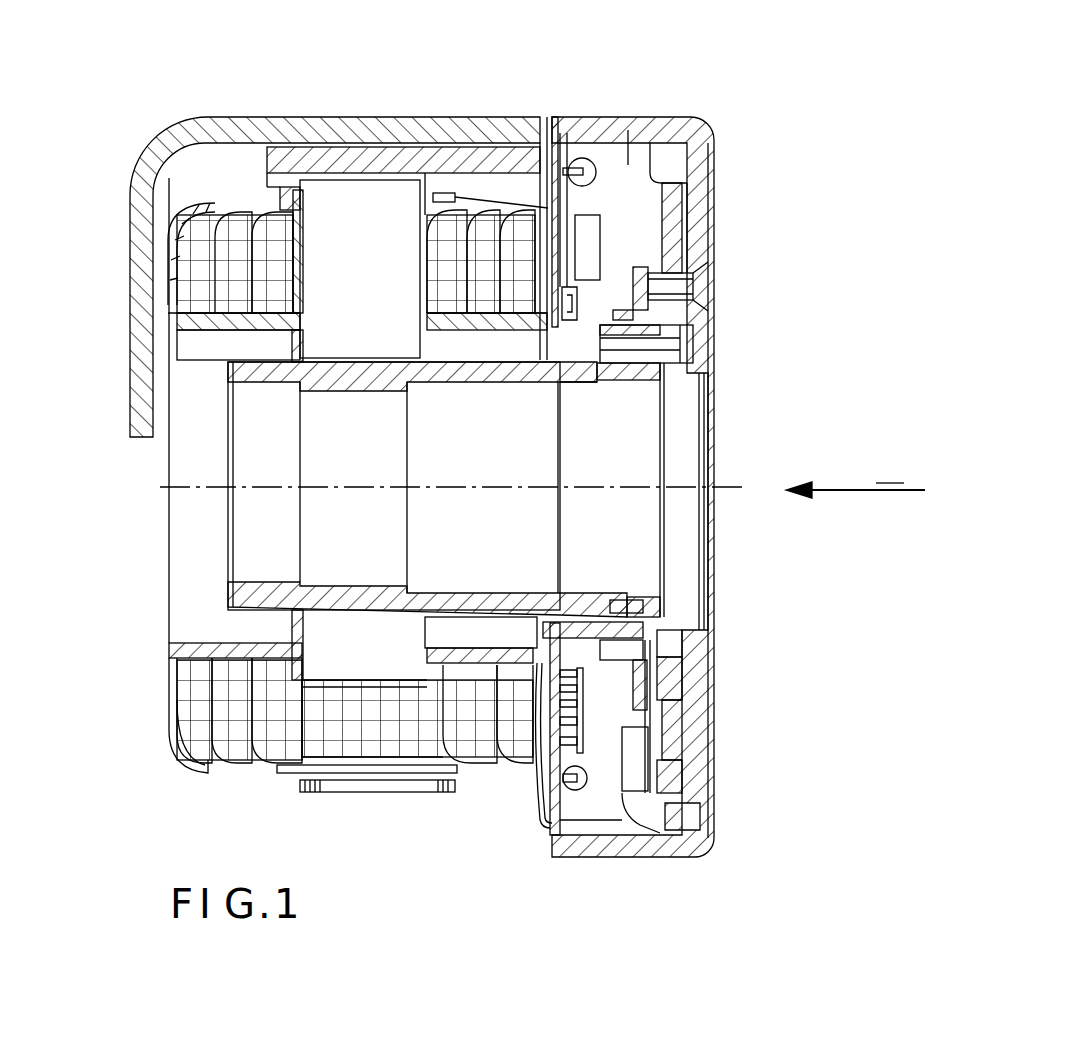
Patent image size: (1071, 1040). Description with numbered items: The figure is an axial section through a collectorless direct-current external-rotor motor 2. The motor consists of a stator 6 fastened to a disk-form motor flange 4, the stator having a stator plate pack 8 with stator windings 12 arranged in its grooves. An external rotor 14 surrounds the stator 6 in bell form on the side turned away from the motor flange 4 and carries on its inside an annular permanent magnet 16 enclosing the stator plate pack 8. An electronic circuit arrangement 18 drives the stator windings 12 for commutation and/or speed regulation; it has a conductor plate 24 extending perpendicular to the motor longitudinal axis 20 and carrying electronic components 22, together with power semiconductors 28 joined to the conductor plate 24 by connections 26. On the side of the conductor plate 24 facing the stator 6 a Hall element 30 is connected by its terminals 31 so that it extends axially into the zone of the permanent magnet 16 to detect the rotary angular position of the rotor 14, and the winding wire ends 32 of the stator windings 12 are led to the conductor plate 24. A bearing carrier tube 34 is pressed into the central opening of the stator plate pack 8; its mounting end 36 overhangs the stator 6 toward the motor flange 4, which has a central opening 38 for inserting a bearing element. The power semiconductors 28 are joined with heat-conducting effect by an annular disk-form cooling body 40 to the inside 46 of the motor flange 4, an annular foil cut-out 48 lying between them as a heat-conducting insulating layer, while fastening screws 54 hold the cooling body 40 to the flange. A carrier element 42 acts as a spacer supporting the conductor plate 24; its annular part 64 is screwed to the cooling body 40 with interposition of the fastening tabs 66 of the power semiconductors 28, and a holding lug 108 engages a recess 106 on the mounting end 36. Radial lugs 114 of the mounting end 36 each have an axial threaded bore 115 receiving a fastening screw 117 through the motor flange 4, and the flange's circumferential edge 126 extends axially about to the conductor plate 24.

The collectorless direct-current external-rotor motor 2 is at (856, 137).
The motor flange 4 is at (702, 134).
The stator 6 is at (228, 188).
The stator plate pack 8 is at (349, 295).
The stator windings 12 is at (180, 273).
The external rotor 14 is at (146, 196).
The annular permanent magnet 16 is at (310, 160).
The electronic circuit arrangement 18 is at (618, 186).
The motor longitudinal axis 20 is at (182, 487).
The electronic components 22 is at (598, 215).
The conductor plate 24 is at (578, 150).
The connections 26 is at (590, 858).
The power semiconductors 28 is at (678, 858).
The Hall element 30 is at (444, 192).
The terminals 31 is at (548, 205).
The winding wire ends 32 is at (535, 790).
The bearing carrier tube 34 is at (362, 593).
The mounting end 36 is at (613, 376).
The central opening 38 is at (704, 409).
The cooling body 40 is at (696, 218).
The carrier element 42 is at (682, 690).
The inside 46 is at (714, 178).
The annular foil cut-out 48 is at (683, 125).
The fastening screws 54 is at (683, 290).
The annular part 64 is at (695, 628).
The fastening tabs 66 is at (650, 735).
The recess 106 is at (668, 580).
The holding lug 108 is at (635, 600).
The radial lugs 114 is at (548, 372).
The axial threaded bore 115 is at (668, 385).
The fastening screw 117 is at (683, 345).
The circumferential edge 126 is at (628, 130).